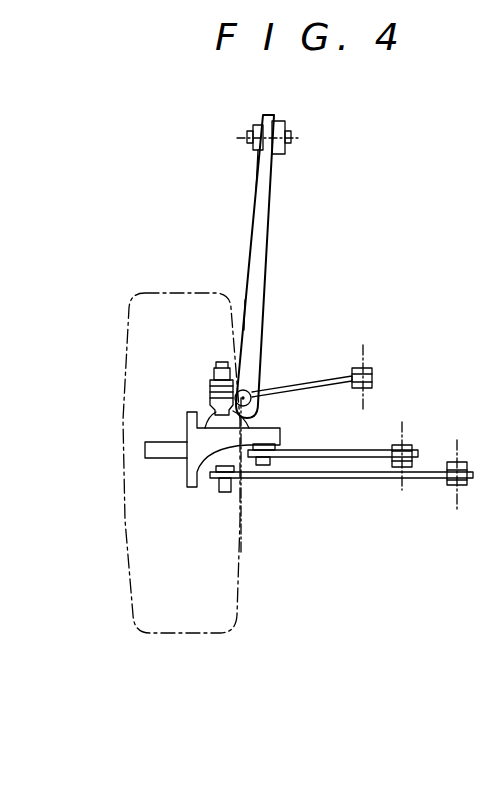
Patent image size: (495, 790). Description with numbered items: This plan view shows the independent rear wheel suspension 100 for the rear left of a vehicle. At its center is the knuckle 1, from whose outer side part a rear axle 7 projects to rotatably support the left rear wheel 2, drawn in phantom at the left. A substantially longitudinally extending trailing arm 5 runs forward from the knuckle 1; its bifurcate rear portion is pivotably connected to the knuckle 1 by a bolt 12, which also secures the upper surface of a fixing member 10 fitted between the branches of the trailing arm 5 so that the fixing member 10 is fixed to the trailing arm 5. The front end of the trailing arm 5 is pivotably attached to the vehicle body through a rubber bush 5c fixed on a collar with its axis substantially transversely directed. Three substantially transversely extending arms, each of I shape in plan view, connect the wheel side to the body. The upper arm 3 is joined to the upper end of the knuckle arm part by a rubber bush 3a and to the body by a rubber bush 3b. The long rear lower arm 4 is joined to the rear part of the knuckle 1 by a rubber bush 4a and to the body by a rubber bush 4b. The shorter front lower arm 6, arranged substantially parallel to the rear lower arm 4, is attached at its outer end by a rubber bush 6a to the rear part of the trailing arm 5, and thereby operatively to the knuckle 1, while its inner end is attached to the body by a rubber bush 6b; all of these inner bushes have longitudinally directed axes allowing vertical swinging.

The knuckle 1 is at (186, 474).
The left rear wheel 2 is at (121, 372).
The upper arm 3 is at (356, 447).
The rubber bush 3a is at (268, 463).
The rubber bush 3b is at (411, 446).
The rear lower arm 4 is at (376, 481).
The rubber bush 4a is at (223, 494).
The rubber bush 4b is at (457, 490).
The trailing arm 5 is at (273, 214).
The rubber bush 5c is at (252, 128).
The front lower arm 6 is at (310, 368).
The rubber bush 6a is at (214, 392).
The rubber bush 6b is at (372, 368).
The rear axle 7 is at (145, 452).
The fixing member 10 is at (221, 369).
The bolt 12 is at (250, 392).
The independent rear wheel suspension 100 is at (412, 248).